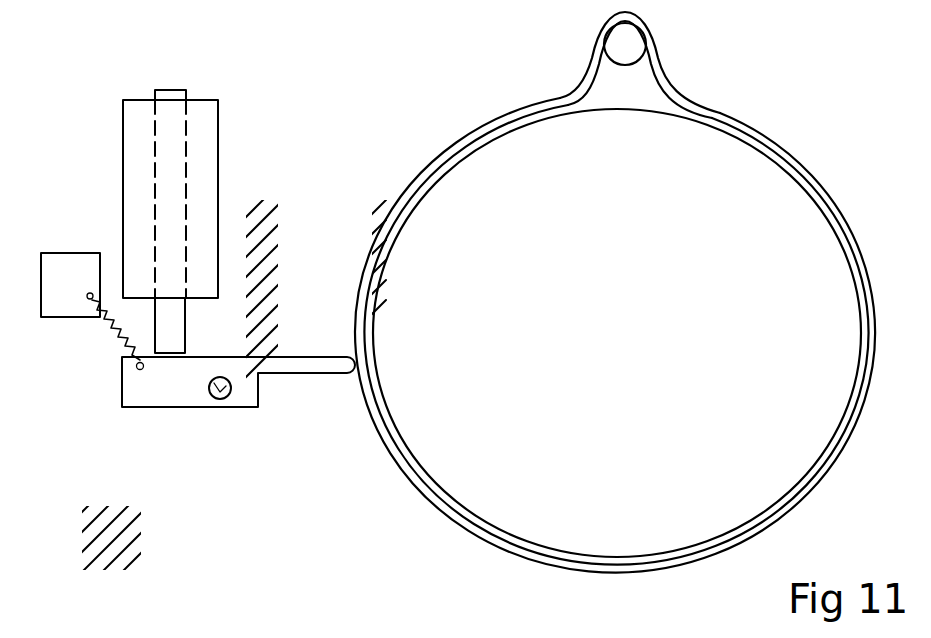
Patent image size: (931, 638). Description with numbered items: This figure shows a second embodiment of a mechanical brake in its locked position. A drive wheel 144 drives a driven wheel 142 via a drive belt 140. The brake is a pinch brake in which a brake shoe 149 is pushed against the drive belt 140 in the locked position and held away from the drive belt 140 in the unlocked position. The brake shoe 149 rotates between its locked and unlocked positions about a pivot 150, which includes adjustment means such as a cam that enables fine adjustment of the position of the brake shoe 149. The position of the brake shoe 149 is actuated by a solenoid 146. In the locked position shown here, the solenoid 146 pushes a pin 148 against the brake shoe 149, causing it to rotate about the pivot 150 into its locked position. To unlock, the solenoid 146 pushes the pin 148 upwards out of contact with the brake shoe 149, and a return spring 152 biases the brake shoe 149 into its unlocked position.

The drive belt 140 is at (413, 180).
The driven wheel 142 is at (783, 210).
The drive wheel 144 is at (638, 50).
The solenoid 146 is at (140, 140).
The pin 148 is at (172, 88).
The brake shoe 149 is at (158, 390).
The pivot 150 is at (220, 392).
The return spring 152 is at (105, 340).